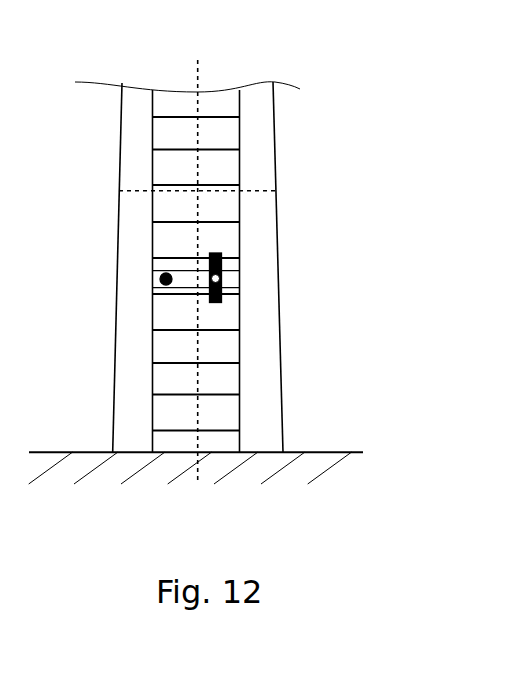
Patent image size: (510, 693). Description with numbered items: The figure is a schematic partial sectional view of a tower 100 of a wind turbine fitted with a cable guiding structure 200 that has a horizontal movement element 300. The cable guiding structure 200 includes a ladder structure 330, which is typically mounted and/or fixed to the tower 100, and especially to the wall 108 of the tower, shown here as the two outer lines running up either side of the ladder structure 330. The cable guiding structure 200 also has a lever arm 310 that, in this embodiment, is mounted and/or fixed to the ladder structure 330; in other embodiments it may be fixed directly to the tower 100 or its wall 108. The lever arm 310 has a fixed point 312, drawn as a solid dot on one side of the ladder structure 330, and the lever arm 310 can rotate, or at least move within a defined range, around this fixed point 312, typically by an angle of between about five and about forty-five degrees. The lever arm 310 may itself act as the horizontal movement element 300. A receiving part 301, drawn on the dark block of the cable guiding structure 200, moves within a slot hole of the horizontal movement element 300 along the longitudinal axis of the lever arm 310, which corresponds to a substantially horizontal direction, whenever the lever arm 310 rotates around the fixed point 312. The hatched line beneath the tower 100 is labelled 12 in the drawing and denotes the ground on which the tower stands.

The tower 100 is at (349, 69).
The wall 108 is at (283, 377).
The ladder structure 330 is at (242, 377).
The horizontal movement element 300 is at (140, 279).
The lever arm 310 is at (184, 288).
The fixed point 312 is at (166, 286).
The cable guiding structure 200 is at (258, 277).
The receiving part 301 is at (216, 253).
The ground 12 is at (377, 494).